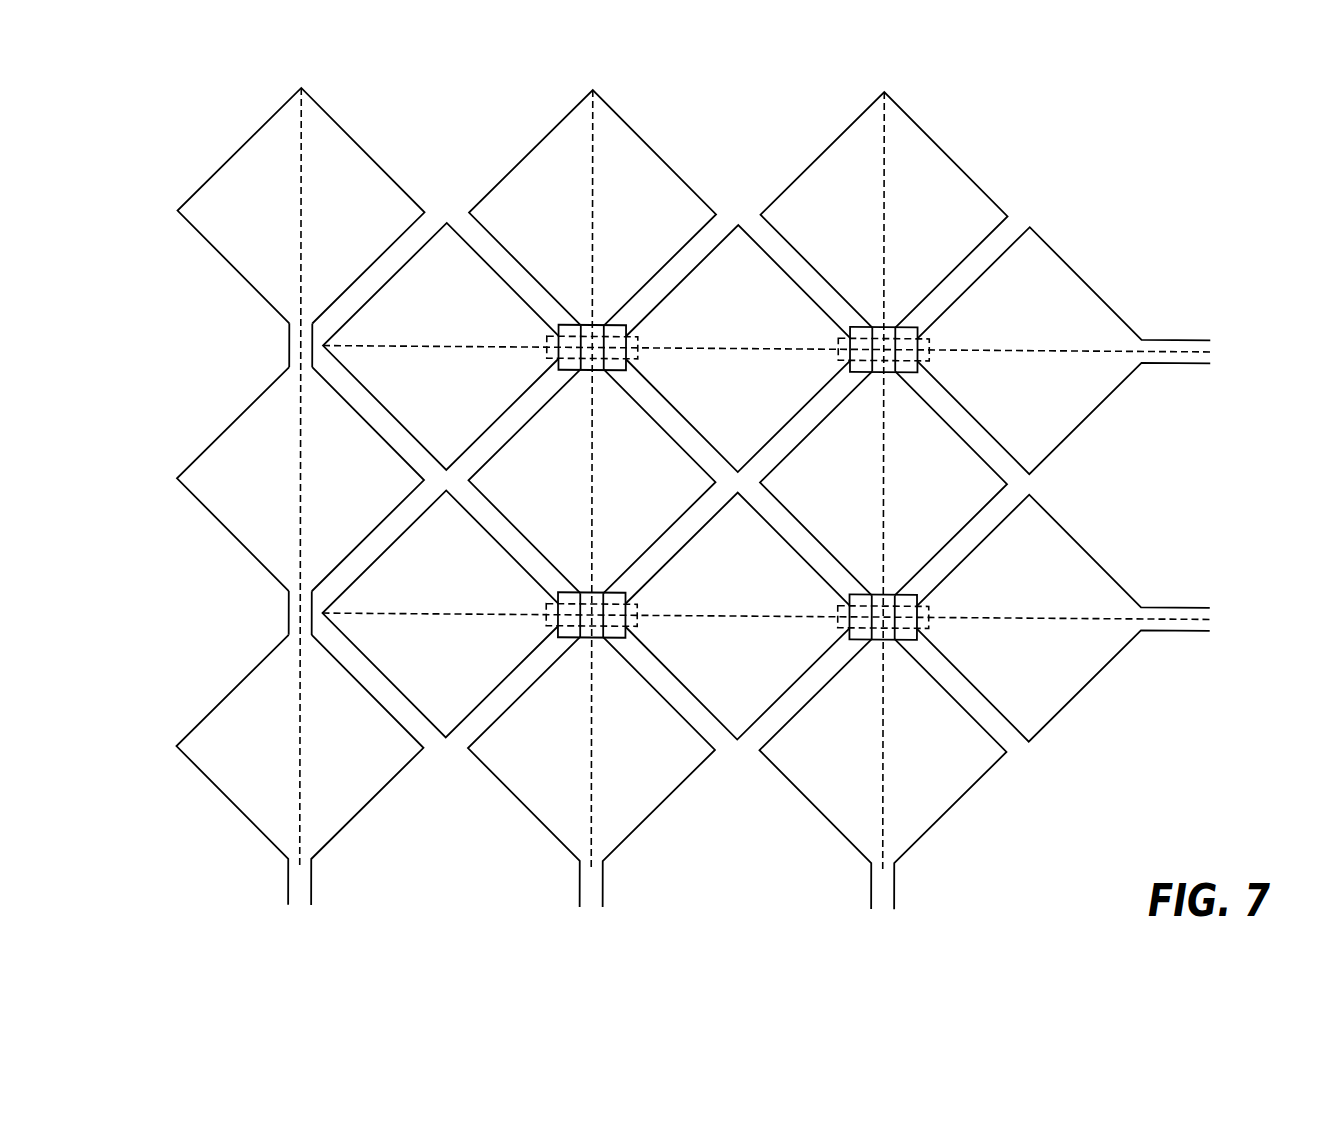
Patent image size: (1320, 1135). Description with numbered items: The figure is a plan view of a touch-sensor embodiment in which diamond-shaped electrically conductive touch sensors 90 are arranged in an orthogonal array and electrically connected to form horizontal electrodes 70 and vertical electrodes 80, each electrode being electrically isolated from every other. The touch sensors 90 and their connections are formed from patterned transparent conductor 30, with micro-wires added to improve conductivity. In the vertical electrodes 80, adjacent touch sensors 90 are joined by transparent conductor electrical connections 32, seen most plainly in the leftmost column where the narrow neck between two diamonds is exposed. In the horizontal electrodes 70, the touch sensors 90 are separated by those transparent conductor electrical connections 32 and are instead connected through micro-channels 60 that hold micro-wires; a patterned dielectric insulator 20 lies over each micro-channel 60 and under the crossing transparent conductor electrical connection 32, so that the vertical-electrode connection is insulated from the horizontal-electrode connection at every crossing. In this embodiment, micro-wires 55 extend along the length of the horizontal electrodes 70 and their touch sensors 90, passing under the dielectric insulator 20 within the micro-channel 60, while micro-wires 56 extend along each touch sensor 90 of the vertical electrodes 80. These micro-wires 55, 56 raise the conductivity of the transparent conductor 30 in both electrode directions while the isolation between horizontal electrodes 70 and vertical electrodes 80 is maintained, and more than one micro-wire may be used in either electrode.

The vertical electrode 80 is at (378, 163).
The transparent conductor electrical connection 32 is at (288, 347).
The touch sensor 90 is at (378, 400).
The transparent conductor 30 is at (490, 500).
The horizontal electrode 70 is at (1098, 293).
The micro-wire 56 is at (303, 488).
The patterned dielectric insulator 20 is at (598, 592).
The micro-channel 60 is at (930, 607).
The micro-wire 55 is at (1020, 616).